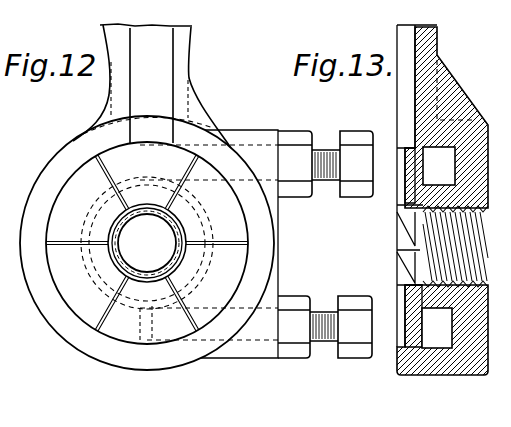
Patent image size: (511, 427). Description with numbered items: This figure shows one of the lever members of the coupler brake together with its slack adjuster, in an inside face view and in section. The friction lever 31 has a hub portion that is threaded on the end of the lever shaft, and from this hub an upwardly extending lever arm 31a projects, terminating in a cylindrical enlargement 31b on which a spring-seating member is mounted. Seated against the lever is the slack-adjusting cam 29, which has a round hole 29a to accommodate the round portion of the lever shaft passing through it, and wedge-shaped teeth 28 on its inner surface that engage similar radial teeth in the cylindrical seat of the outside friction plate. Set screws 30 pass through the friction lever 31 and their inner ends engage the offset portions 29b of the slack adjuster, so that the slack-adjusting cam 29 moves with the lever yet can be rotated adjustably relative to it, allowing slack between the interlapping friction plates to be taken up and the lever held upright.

In FIG. 12, the wedge-shaped teeth 28 is at (222, 283).
In FIG. 13, the wedge-shaped teeth 28 is at (400, 268).
In FIG. 12, the slack-adjusting cam 29 is at (248, 265).
In FIG. 13, the slack-adjusting cam 29 is at (410, 206).
In FIG. 12, the round hole 29a is at (206, 262).
In FIG. 13, the round hole 29a is at (420, 252).
In FIG. 12, the offset portions 29b is at (139, 341).
In FIG. 13, the offset portions 29b is at (438, 247).
In FIG. 12, the set screws 30 is at (334, 181).
In FIG. 12, the friction levers 31 is at (228, 147).
In FIG. 13, the friction levers 31 is at (476, 124).
In FIG. 12, the lever arm 31a is at (167, 80).
In FIG. 13, the lever arm 31a is at (415, 40).
In FIG. 12, the cylindrical enlargement 31b is at (192, 32).